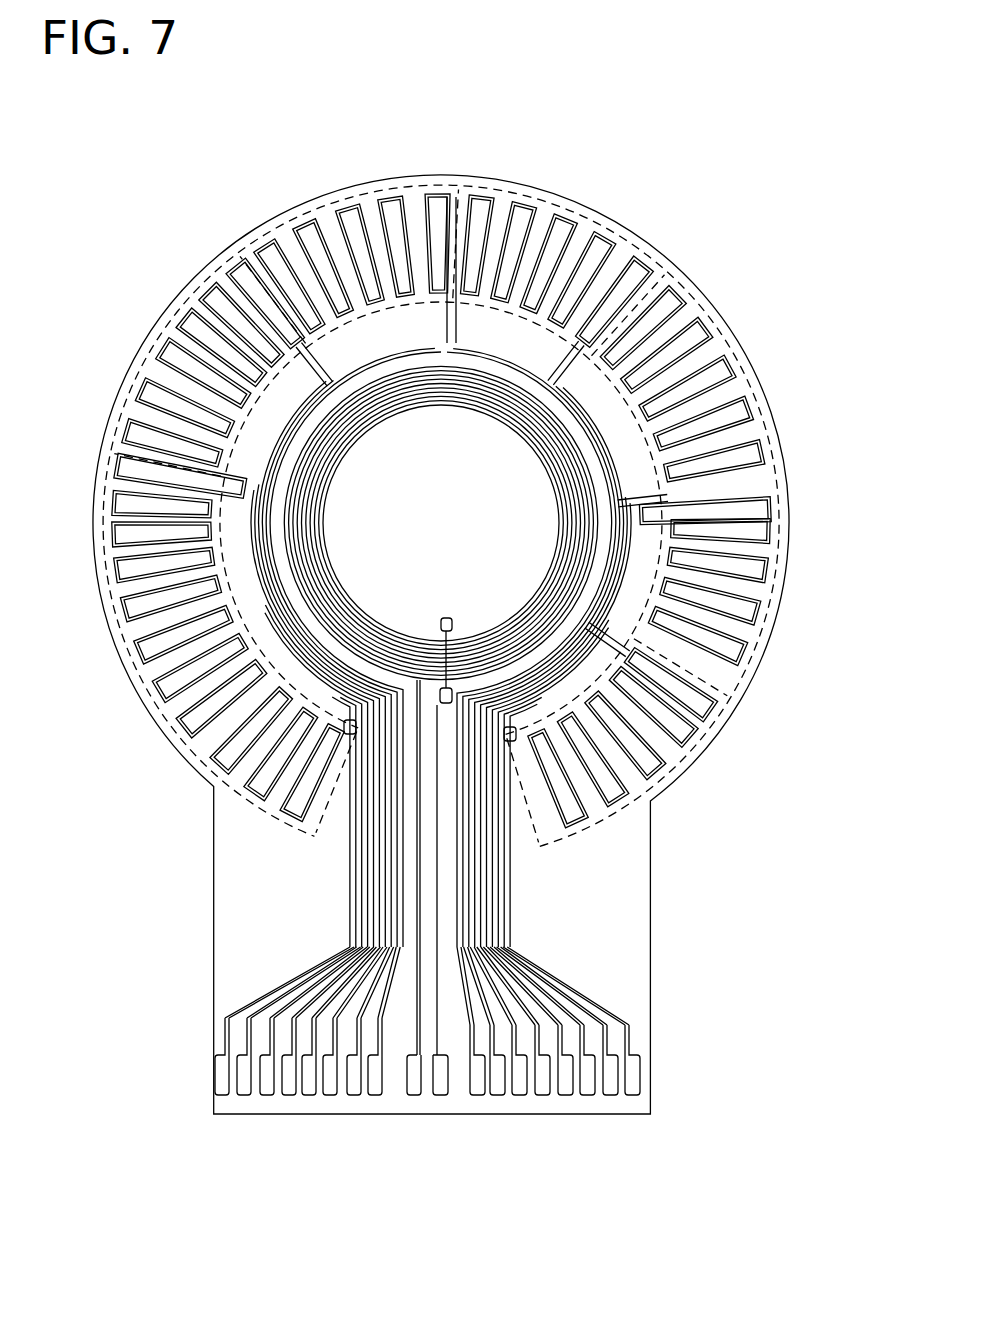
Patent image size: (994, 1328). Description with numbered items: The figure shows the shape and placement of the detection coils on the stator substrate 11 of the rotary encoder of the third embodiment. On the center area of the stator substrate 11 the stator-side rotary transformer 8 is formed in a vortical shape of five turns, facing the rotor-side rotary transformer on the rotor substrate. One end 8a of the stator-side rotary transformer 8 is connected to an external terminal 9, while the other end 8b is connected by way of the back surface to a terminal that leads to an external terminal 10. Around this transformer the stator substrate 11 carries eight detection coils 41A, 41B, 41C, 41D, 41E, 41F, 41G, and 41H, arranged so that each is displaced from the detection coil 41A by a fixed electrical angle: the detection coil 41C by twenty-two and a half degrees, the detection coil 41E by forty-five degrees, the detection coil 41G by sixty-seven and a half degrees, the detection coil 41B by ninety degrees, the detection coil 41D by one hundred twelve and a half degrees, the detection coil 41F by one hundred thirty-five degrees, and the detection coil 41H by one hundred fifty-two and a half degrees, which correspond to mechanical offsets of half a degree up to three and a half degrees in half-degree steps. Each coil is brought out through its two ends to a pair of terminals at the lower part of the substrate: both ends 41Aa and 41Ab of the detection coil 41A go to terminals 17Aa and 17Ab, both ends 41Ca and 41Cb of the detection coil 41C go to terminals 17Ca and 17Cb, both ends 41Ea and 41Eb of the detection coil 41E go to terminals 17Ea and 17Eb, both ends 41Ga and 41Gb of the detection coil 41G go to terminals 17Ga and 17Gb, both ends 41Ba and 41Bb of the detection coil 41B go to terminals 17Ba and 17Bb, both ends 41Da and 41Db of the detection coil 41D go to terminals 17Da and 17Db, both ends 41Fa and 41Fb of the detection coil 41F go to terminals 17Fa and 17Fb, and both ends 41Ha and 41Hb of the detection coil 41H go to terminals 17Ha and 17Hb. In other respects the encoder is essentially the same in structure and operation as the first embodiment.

The stator-side rotary transformer 8 is at (457, 400).
The one end of the stator-side rotary transformer 8a is at (440, 648).
The other end of the stator-side rotary transformer 8b is at (449, 618).
The external terminal 9 is at (414, 1097).
The external terminal 10 is at (441, 1097).
The stator substrate 11 is at (792, 608).
The detection coil 41A is at (256, 697).
The end of detection coil 41A 41Aa is at (348, 726).
The end of detection coil 41A 41Ab is at (343, 731).
The detection coil 41B is at (572, 254).
The end of detection coil 41B 41Ba is at (470, 200).
The end of detection coil 41B 41Bb is at (605, 350).
The detection coil 41C is at (138, 574).
The end of detection coil 41C 41Ca is at (228, 645).
The end of detection coil 41C 41Cb is at (216, 488).
The detection coil 41D is at (715, 373).
The end of detection coil 41D 41Da is at (612, 358).
The end of detection coil 41D 41Db is at (725, 455).
The detection coil 41E is at (175, 352).
The end of detection coil 41E 41Ea is at (215, 467).
The end of detection coil 41E 41Eb is at (303, 340).
The detection coil 41F is at (714, 608).
The end of detection coil 41F 41Fa is at (770, 512).
The end of detection coil 41F 41Fb is at (725, 660).
The detection coil 41G is at (329, 254).
The end of detection coil 41G 41Ga is at (300, 328).
The end of detection coil 41G 41Gb is at (446, 196).
The detection coil 41H is at (623, 714).
The end of detection coil 41H 41Ha is at (662, 735).
The end of detection coil 41H 41Hb is at (512, 722).
The terminal 17Aa is at (222, 1097).
The terminal 17Ab is at (244, 1097).
The terminal 17Ba is at (477, 1097).
The terminal 17Bb is at (497, 1097).
The terminal 17Ca is at (267, 1097).
The terminal 17Cb is at (289, 1097).
The terminal 17Da is at (520, 1097).
The terminal 17Db is at (542, 1097).
The terminal 17Ea is at (309, 1097).
The terminal 17Eb is at (330, 1097).
The terminal 17Fa is at (566, 1097).
The terminal 17Fb is at (588, 1097).
The terminal 17Ga is at (354, 1097).
The terminal 17Gb is at (375, 1097).
The terminal 17Ha is at (612, 1097).
The terminal 17Hb is at (633, 1097).